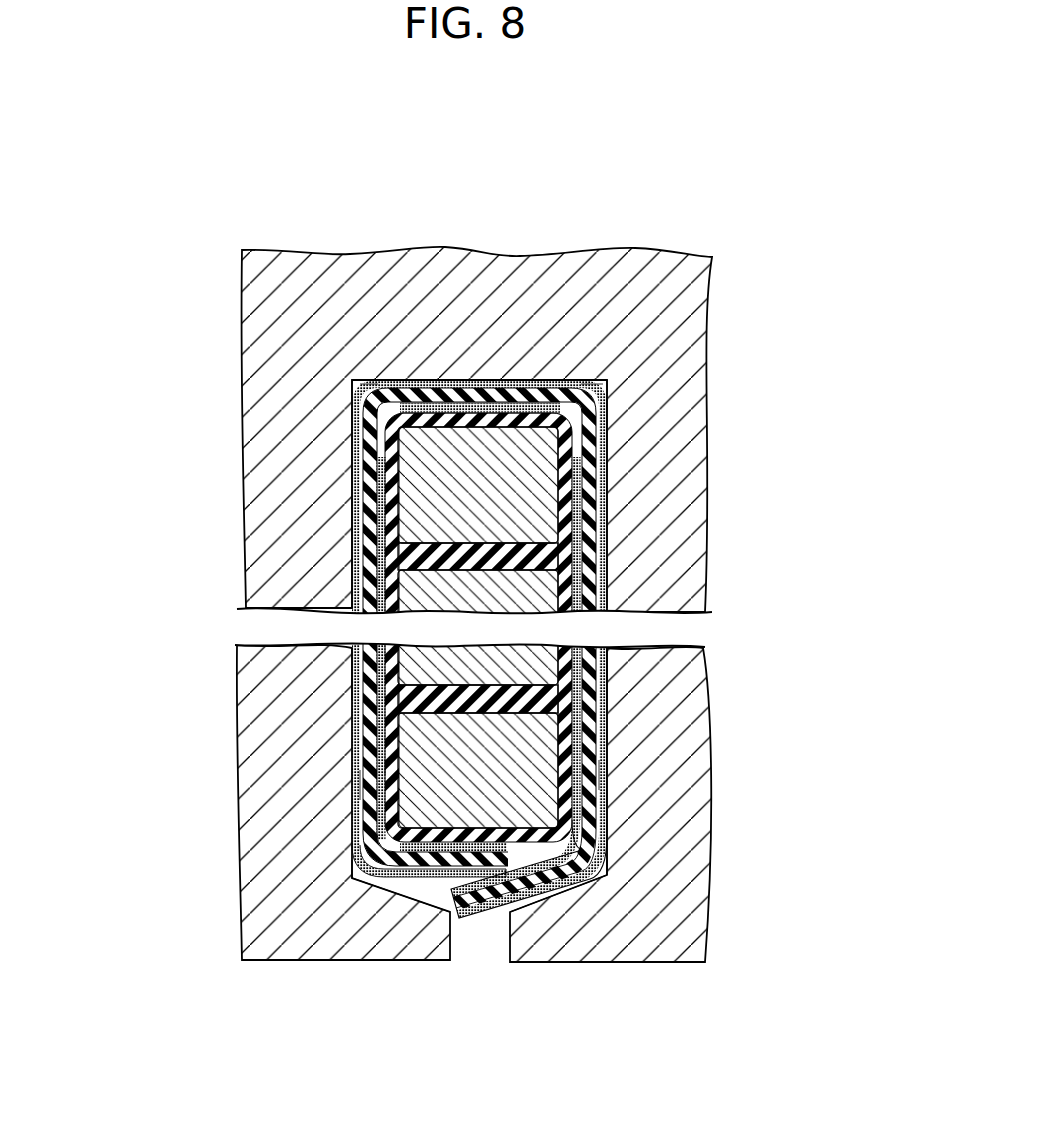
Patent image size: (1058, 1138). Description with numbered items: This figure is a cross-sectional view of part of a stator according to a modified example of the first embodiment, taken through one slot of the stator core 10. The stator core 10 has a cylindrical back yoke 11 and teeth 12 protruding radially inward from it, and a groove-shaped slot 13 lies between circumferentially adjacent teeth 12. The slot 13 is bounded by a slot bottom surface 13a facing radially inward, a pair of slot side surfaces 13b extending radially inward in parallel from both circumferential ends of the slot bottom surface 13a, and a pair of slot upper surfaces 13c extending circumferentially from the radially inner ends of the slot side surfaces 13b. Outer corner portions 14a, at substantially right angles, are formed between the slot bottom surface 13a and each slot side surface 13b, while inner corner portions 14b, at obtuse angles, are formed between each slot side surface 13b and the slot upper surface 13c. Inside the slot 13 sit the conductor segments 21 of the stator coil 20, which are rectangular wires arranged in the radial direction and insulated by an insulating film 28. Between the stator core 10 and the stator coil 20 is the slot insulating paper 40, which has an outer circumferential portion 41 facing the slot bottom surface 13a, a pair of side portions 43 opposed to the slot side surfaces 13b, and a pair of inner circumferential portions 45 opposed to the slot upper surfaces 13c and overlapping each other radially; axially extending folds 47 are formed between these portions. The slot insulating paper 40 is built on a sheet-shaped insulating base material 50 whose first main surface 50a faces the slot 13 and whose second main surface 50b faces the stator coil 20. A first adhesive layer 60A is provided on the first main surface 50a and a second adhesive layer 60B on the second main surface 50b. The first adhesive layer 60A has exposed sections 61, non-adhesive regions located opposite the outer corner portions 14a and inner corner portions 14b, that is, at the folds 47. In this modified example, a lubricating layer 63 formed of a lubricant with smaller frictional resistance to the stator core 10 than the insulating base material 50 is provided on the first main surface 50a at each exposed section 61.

The stator core 10 is at (718, 235).
The back yoke 11 is at (475, 435).
The teeth 12 is at (275, 503).
The slot 13 is at (600, 725).
The slot bottom surface 13a is at (468, 380).
The slot side surfaces 13b is at (608, 545).
The slot upper surfaces 13c is at (420, 902).
The outer corner portions 14a is at (352, 400).
The inner corner portions 14b is at (352, 865).
The stator coil 20 is at (597, 665).
The conductor segments 21 is at (380, 767).
The insulating film 28 is at (380, 752).
The slot insulating paper 40 is at (465, 600).
The outer circumferential portion 41 is at (438, 382).
The side portions 43 is at (355, 787).
The inner circumferential portions 45 is at (473, 910).
The folds 47 is at (360, 383).
The insulating base material 50 is at (365, 518).
The first main surface 50a is at (390, 530).
The second main surface 50b is at (370, 475).
The first adhesive layer 60A is at (518, 405).
The second adhesive layer 60B is at (570, 390).
The exposed sections 61 is at (600, 400).
The lubricating layer 63 is at (355, 410).